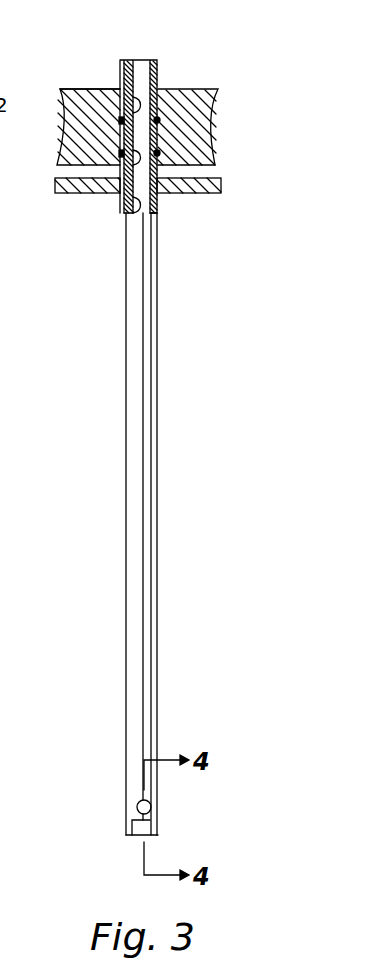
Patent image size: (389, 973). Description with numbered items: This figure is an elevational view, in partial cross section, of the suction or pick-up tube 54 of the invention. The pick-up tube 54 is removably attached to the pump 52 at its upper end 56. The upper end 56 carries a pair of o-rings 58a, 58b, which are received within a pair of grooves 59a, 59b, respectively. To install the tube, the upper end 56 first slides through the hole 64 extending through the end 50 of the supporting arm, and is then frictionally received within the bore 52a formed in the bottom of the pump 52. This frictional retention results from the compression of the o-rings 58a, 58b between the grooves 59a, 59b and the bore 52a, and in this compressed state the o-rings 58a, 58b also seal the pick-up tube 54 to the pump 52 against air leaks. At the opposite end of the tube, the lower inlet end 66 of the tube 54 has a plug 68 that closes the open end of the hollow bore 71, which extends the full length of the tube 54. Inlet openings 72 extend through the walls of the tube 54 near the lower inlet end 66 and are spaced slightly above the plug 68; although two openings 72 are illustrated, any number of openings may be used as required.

The end of arm 50 is at (55, 188).
The pump 52 is at (62, 137).
The bore 52a is at (117, 88).
The pick-up tube 54 is at (126, 522).
The upper end 56 is at (125, 57).
The o-ring 58a is at (159, 118).
The o-ring 58b is at (159, 151).
The groove 59a is at (118, 88).
The groove 59b is at (125, 196).
The hole 64 is at (158, 197).
The lower inlet end 66 is at (160, 831).
The plug 68 is at (138, 836).
The hollow bore 71 is at (133, 218).
The inlet openings 72 is at (138, 814).